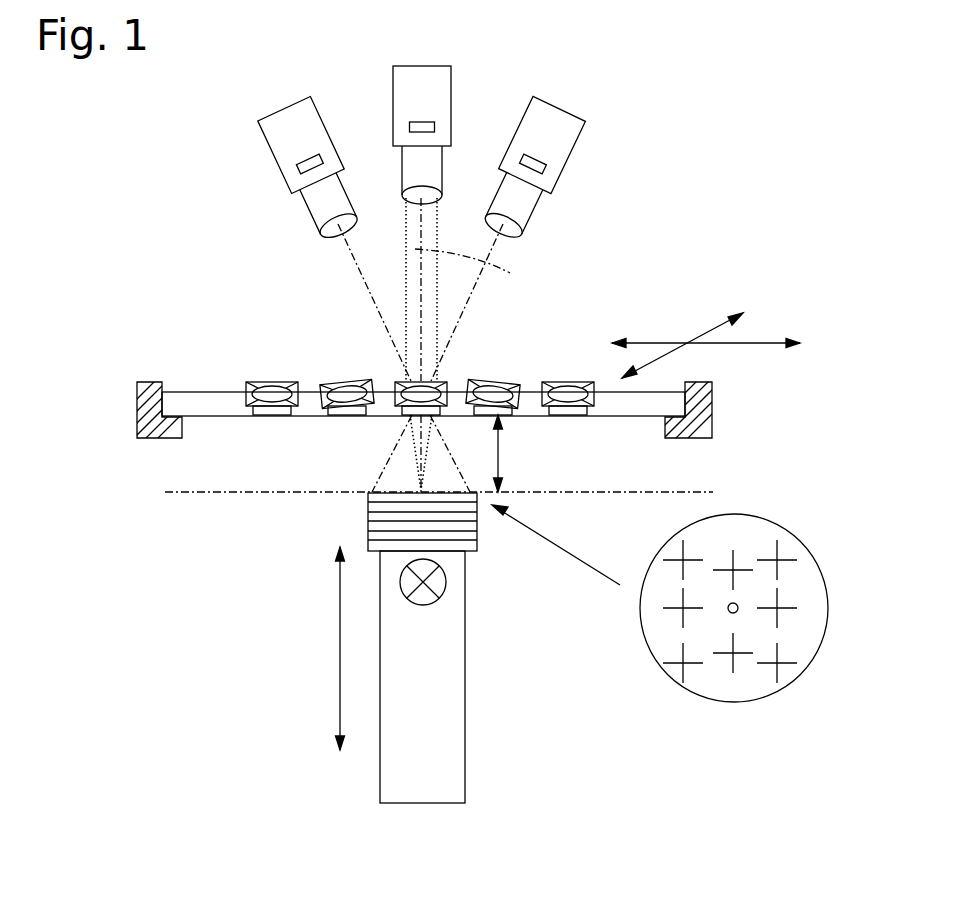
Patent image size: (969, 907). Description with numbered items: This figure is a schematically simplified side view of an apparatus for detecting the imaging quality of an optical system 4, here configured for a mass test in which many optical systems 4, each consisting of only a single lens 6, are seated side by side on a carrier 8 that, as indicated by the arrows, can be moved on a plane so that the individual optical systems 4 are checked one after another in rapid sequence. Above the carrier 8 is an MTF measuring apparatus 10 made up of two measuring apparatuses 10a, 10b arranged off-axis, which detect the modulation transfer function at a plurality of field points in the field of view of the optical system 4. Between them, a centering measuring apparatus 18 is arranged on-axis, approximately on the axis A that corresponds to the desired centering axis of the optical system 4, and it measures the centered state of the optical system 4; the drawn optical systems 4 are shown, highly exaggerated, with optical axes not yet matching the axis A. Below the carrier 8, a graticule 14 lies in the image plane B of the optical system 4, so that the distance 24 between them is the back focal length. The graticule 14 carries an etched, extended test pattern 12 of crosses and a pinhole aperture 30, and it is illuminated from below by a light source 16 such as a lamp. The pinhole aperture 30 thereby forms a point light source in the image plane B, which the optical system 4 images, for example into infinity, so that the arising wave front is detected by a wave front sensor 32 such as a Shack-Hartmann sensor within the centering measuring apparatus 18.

The MTF measuring apparatus 10 is at (416, 171).
The measuring apparatus 10a is at (280, 137).
The measuring apparatus 10b is at (563, 137).
The centering measuring apparatus 18 is at (419, 103).
The wave front sensor 32 is at (386, 97).
The carrier 8 is at (200, 392).
The lens 6 is at (420, 362).
The optical system 4 is at (447, 388).
The back focal length 24 is at (500, 450).
The graticule 14 is at (368, 496).
The light source 16 is at (437, 585).
The test pattern 12 is at (777, 608).
The pinhole aperture 30 is at (736, 612).
The axis A is at (473, 269).
The image plane B is at (672, 492).